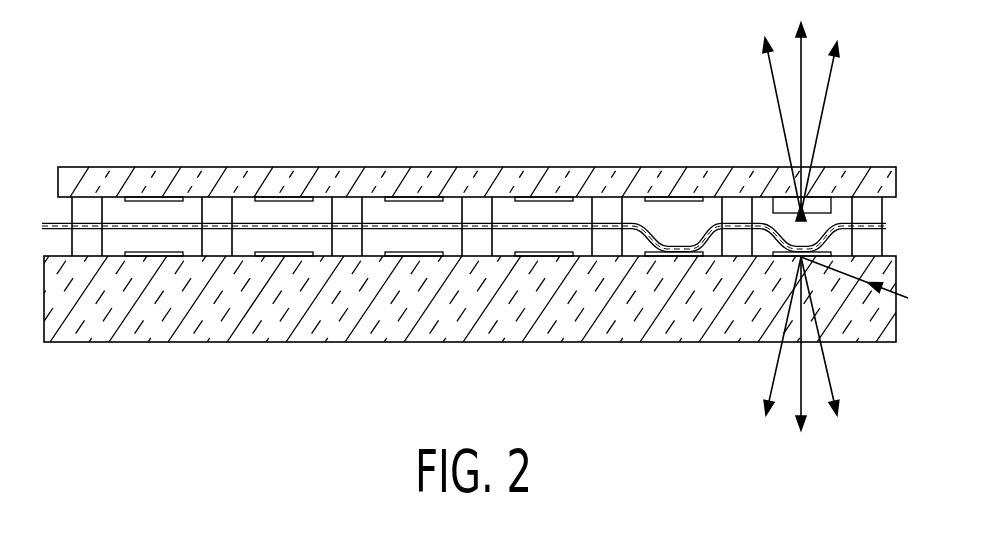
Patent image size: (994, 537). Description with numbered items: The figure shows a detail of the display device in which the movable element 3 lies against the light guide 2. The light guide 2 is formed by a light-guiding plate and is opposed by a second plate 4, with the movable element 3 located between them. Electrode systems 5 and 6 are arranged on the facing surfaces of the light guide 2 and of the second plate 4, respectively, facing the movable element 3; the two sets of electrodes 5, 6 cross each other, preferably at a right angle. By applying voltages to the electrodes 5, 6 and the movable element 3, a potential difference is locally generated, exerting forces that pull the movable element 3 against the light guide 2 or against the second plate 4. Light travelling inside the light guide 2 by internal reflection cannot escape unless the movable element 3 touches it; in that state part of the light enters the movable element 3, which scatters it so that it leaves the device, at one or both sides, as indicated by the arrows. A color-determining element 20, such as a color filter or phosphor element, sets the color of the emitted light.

The light guide 2 is at (147, 323).
The movable element 3 is at (863, 224).
The second plate 4 is at (302, 182).
The electrode system 5 is at (668, 258).
The electrode system 6 is at (155, 197).
The color-determining element 20 is at (782, 205).